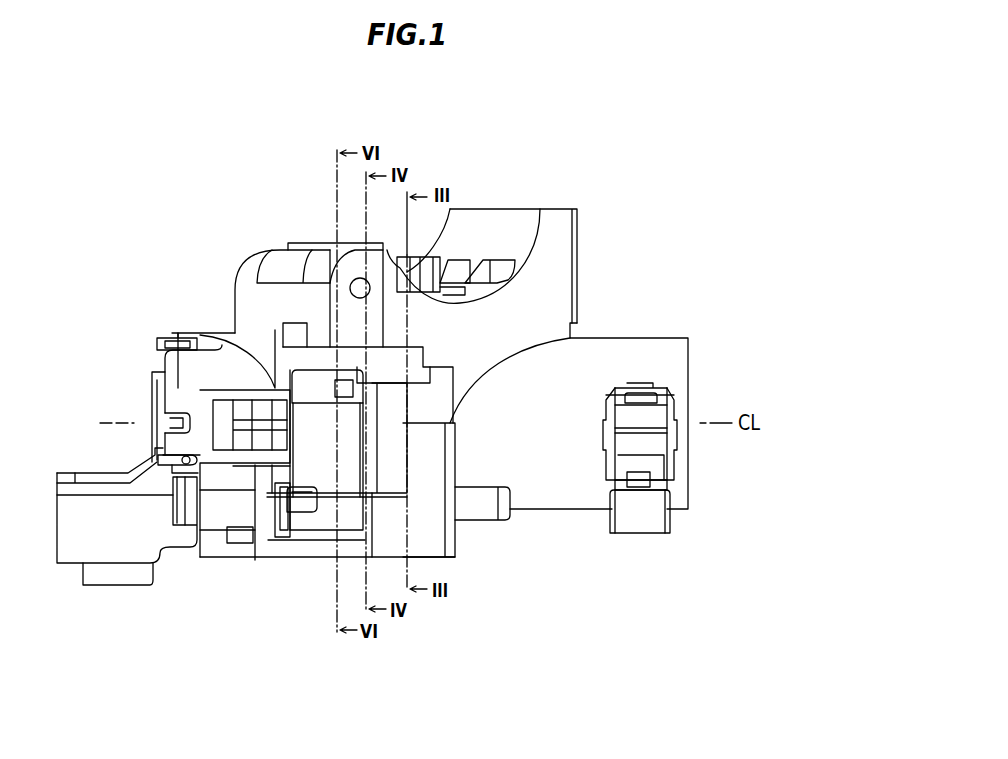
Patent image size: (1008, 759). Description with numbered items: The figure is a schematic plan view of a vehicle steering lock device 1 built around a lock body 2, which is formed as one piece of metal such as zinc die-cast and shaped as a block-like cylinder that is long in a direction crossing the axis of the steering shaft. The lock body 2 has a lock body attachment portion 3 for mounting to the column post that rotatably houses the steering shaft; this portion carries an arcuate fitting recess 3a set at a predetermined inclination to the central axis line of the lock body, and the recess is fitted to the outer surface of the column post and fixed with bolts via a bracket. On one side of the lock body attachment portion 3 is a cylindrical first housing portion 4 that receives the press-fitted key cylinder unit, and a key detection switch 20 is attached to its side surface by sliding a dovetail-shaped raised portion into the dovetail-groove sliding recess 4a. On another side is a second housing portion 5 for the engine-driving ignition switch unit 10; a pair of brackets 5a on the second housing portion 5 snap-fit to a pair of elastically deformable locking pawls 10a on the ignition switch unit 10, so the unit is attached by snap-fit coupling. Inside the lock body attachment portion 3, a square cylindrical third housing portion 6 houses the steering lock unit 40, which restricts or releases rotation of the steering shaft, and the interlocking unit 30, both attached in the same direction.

The steering lock device 1 is at (569, 102).
The lock body 2 is at (602, 308).
The lock body attachment portion 3 is at (240, 303).
The fitting recess 3a is at (480, 220).
The first housing portion 4 is at (688, 373).
The sliding recess 4a is at (608, 392).
The second housing portion 5 is at (155, 370).
The brackets 5a is at (232, 387).
The third housing portion 6 is at (435, 557).
The ignition switch unit 10 is at (103, 600).
The locking pawls 10a is at (240, 443).
The key detection switch 20 is at (636, 551).
The interlocking unit 30 is at (297, 554).
The steering lock unit 40 is at (318, 569).